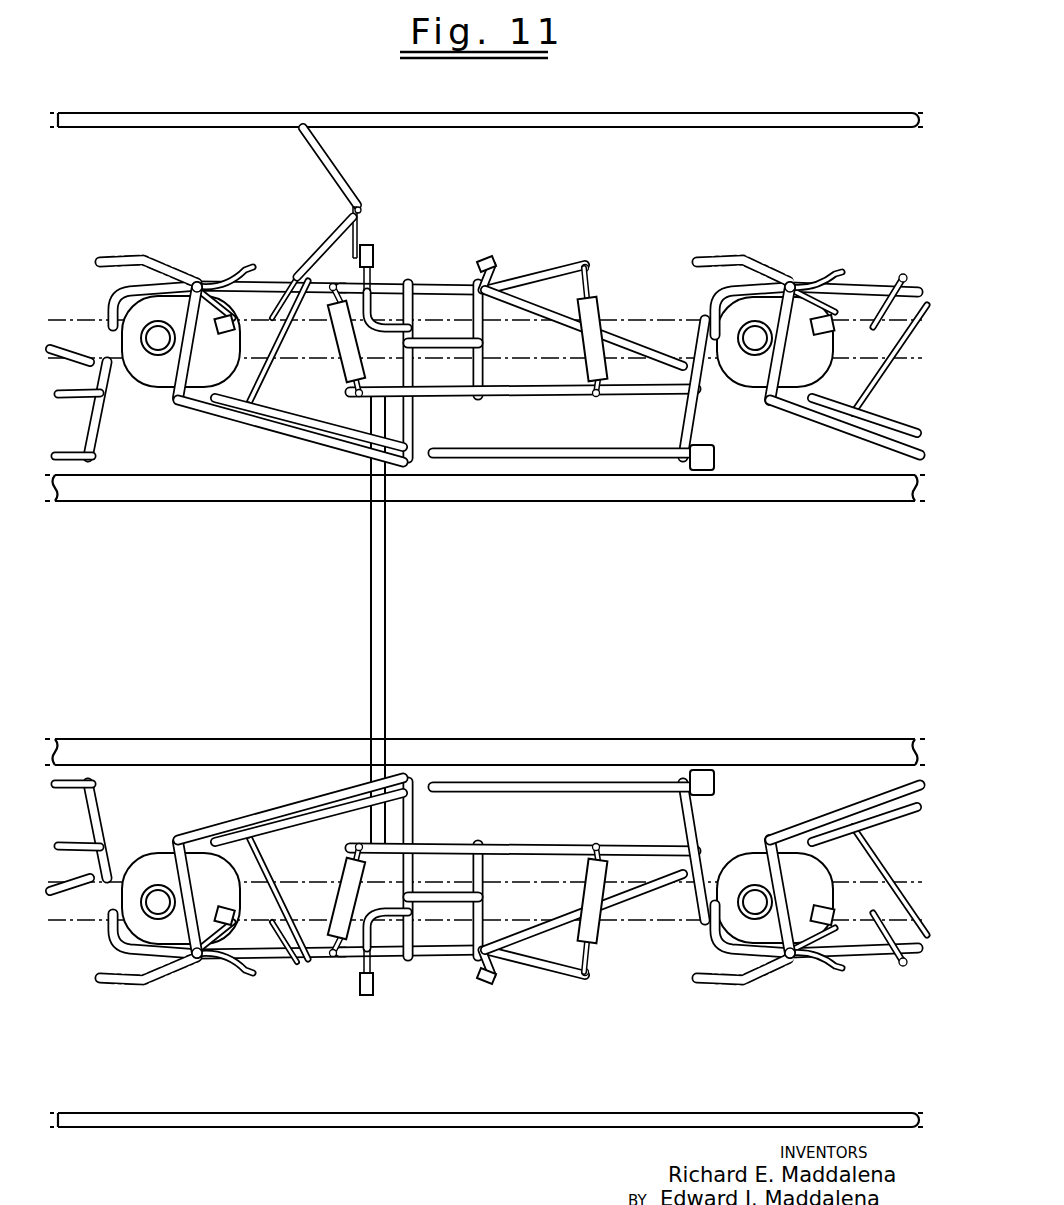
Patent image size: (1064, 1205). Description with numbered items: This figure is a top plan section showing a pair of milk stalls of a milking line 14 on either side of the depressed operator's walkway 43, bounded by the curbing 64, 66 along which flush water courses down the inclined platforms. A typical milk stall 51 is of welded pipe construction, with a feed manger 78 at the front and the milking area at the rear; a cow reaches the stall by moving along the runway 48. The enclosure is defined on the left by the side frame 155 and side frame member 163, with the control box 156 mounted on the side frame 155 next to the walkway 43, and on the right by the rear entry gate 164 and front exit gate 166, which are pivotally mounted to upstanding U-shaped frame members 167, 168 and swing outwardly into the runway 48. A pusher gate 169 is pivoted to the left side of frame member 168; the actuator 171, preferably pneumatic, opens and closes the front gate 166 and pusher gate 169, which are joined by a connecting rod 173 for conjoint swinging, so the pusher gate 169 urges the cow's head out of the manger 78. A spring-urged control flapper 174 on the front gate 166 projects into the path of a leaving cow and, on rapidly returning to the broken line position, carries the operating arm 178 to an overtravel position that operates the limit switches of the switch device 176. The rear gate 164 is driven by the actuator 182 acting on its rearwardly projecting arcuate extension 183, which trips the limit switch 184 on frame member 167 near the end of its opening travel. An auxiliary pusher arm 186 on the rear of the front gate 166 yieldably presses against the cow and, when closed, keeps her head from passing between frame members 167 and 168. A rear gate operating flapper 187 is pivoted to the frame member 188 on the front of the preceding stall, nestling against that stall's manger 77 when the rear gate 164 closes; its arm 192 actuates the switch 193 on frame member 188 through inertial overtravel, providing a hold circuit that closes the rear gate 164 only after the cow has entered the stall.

The milking line 14 is at (560, 1006).
The operator's walkway 43 is at (163, 624).
The runway 48 is at (553, 180).
The milk stall 51 is at (484, 515).
The curbing 64 is at (561, 748).
The curbing 66 is at (602, 492).
The manger 77 is at (750, 387).
The feed manger 78 is at (152, 387).
The side frame 155 is at (613, 452).
The control box 156 is at (715, 450).
The side frame member 163 is at (283, 437).
The rear entry gate 164 is at (641, 348).
The front exit gate 166 is at (330, 162).
The U-shaped frame member 167 is at (472, 328).
The U-shaped frame member 168 is at (410, 285).
The pusher gate 169 is at (303, 427).
The actuator 171 is at (346, 339).
The connecting rod 173 is at (268, 378).
The control flapper 174 is at (301, 252).
The switch device 176 is at (375, 256).
The operating arm 178 is at (352, 244).
The actuator 182 is at (600, 326).
The arcuate extension 183 is at (542, 272).
The limit switch 184 is at (494, 262).
The auxiliary pusher arm 186 is at (441, 289).
The rear gate operating flapper 187 is at (166, 270).
The frame member 188 is at (783, 343).
The arm 192 is at (213, 282).
The switch 193 is at (834, 329).